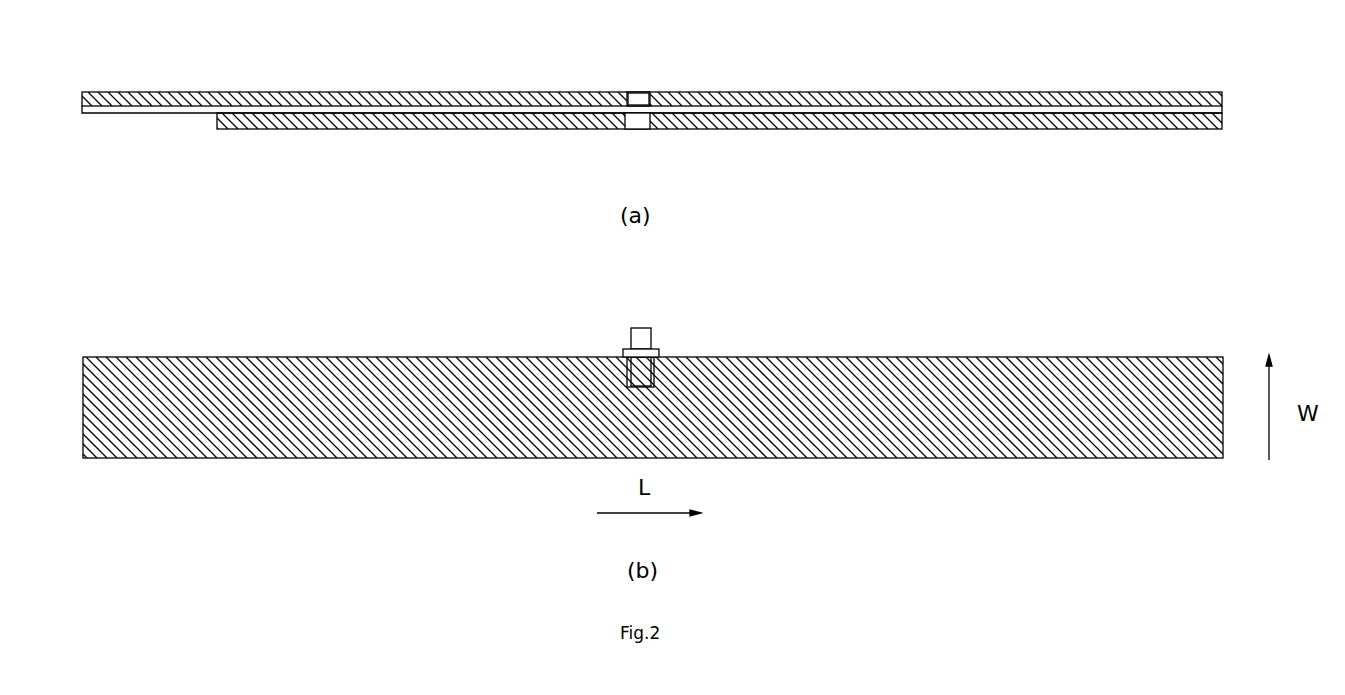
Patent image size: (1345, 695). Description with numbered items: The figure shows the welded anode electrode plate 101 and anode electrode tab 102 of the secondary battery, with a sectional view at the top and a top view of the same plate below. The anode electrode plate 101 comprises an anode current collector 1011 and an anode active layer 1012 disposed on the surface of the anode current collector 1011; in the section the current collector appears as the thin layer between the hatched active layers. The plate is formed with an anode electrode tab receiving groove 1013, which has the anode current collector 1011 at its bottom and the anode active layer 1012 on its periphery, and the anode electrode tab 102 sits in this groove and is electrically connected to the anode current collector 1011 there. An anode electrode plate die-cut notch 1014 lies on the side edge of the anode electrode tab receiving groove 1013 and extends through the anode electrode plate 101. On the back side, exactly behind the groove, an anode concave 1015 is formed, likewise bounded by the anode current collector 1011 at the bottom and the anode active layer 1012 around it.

The anode electrode plate 101 is at (616, 69).
The anode current collector 1011 is at (290, 46).
The anode active layer 1012 is at (185, 71).
The anode electrode tab receiving groove 1013 is at (627, 91).
The anode electrode plate die-cut notch 1014 is at (657, 357).
The anode concave 1015 is at (635, 121).
The anode electrode tab 102 is at (640, 91).